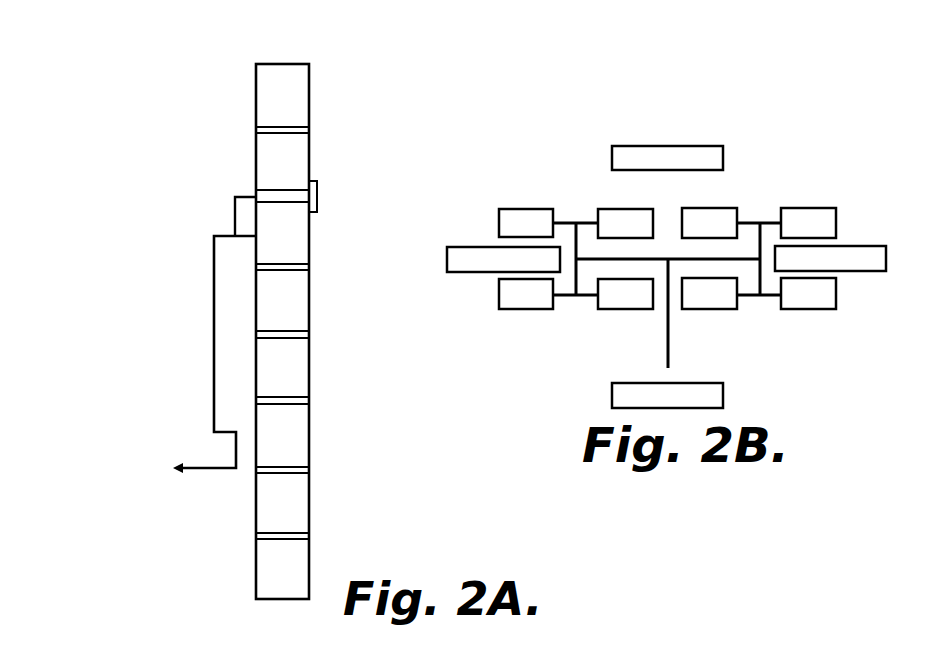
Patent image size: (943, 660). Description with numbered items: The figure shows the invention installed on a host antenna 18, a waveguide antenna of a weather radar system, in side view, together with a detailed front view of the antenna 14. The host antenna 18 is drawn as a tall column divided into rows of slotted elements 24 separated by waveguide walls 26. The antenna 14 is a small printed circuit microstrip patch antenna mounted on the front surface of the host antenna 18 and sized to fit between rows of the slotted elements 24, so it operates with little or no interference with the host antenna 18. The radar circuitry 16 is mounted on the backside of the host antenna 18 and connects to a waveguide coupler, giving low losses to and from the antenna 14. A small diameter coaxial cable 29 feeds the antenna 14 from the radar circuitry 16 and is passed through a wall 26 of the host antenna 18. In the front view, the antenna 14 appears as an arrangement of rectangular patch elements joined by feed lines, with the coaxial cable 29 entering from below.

In FIG. 2A, the antenna 14 is at (321, 198).
In FIG. 2B, the antenna 14 is at (801, 348).
In FIG. 2A, the radar circuitry 16 is at (214, 335).
In FIG. 2A, the host antenna 18 is at (220, 65).
In FIG. 2A, the slotted elements 24 is at (309, 302).
In FIG. 2B, the slotted elements 24 is at (868, 271).
In FIG. 2A, the waveguide walls 26 is at (257, 127).
In FIG. 2A, the coaxial cable 29 is at (235, 213).
In FIG. 2B, the coaxial cable 29 is at (666, 332).